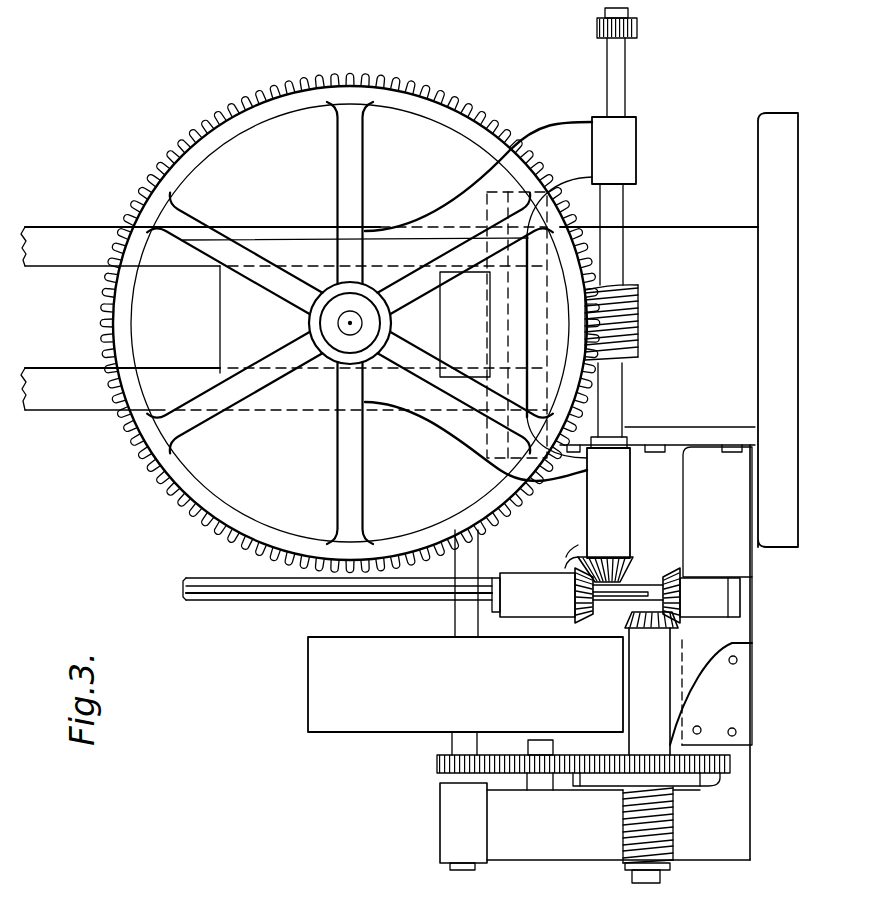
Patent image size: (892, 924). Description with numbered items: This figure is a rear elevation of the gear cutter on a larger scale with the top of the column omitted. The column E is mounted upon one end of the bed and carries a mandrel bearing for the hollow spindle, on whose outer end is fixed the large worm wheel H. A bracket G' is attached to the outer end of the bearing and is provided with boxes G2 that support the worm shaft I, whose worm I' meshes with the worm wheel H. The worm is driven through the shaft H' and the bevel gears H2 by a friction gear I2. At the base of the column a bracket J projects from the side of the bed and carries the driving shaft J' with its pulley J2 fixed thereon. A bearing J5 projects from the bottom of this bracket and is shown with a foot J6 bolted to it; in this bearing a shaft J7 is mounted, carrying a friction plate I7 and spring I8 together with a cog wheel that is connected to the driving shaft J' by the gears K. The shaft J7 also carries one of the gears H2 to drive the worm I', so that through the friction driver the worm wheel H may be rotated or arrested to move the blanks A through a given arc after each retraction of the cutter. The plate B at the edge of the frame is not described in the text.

The column E is at (78, 226).
The worm wheel H is at (349, 323).
The bracket G' is at (387, 301).
The worm shaft I is at (615, 222).
The boxes G2 is at (636, 153).
The blanks A is at (702, 227).
The end plate B is at (759, 175).
The worm I' is at (619, 313).
The gears H2 is at (672, 575).
The shaft H' is at (337, 607).
The driving shaft J' is at (585, 583).
The pulley J2 is at (308, 690).
The bearing J5 is at (637, 698).
The foot J6 is at (712, 743).
The gears K is at (436, 762).
The bracket J is at (581, 657).
The spring I8 is at (623, 836).
The friction plate I7 is at (697, 790).
The friction gear I2 is at (717, 778).
The shaft J7 is at (643, 877).